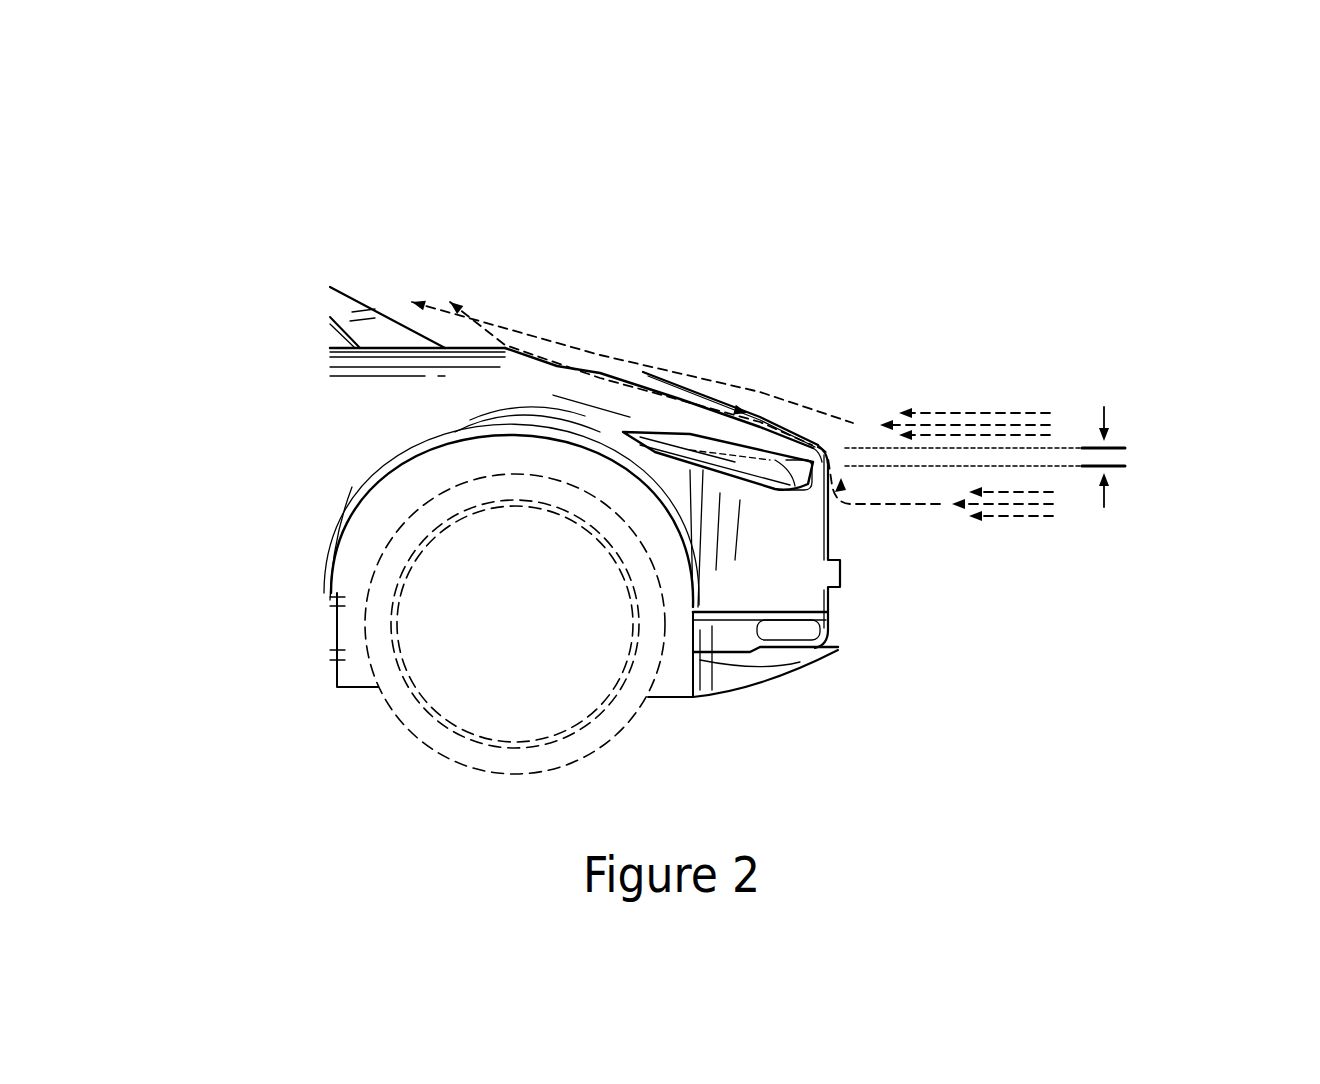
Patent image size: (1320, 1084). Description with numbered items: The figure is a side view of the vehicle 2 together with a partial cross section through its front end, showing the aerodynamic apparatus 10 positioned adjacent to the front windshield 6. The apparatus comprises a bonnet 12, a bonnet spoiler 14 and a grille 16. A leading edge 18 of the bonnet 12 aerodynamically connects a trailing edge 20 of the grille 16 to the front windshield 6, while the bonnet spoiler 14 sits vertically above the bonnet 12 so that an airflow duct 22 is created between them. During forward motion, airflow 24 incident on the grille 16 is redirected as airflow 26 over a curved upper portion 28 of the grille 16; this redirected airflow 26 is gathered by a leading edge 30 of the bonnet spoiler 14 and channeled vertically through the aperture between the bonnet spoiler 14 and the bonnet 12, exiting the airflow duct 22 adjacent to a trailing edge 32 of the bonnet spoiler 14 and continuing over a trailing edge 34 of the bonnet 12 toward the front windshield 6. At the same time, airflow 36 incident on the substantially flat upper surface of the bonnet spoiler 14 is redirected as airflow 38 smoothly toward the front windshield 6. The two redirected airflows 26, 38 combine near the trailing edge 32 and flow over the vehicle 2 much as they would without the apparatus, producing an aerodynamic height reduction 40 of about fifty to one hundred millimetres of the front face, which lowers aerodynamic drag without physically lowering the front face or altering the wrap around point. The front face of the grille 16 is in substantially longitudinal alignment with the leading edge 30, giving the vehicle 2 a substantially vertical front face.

The vehicle 2 is at (236, 258).
The front windshield 6 is at (358, 298).
The aerodynamic apparatus 10 is at (697, 328).
The bonnet 12 is at (557, 365).
The bonnet spoiler 14 is at (812, 452).
The grille 16 is at (835, 527).
The leading edge of the bonnet 18 is at (808, 455).
The trailing edge of the grille 20 is at (788, 422).
The airflow duct 22 is at (724, 390).
The airflow 24 is at (1017, 525).
The redirected airflow 26 is at (887, 515).
The curved upper portion of the grille 28 is at (803, 468).
The leading edge of the bonnet spoiler 30 is at (828, 453).
The trailing edge of the bonnet spoiler 32 is at (656, 372).
The trailing edge of the bonnet 34 is at (505, 345).
The airflow 36 is at (1002, 407).
The redirected airflow 38 is at (855, 422).
The aerodynamic height reduction 40 is at (1137, 458).